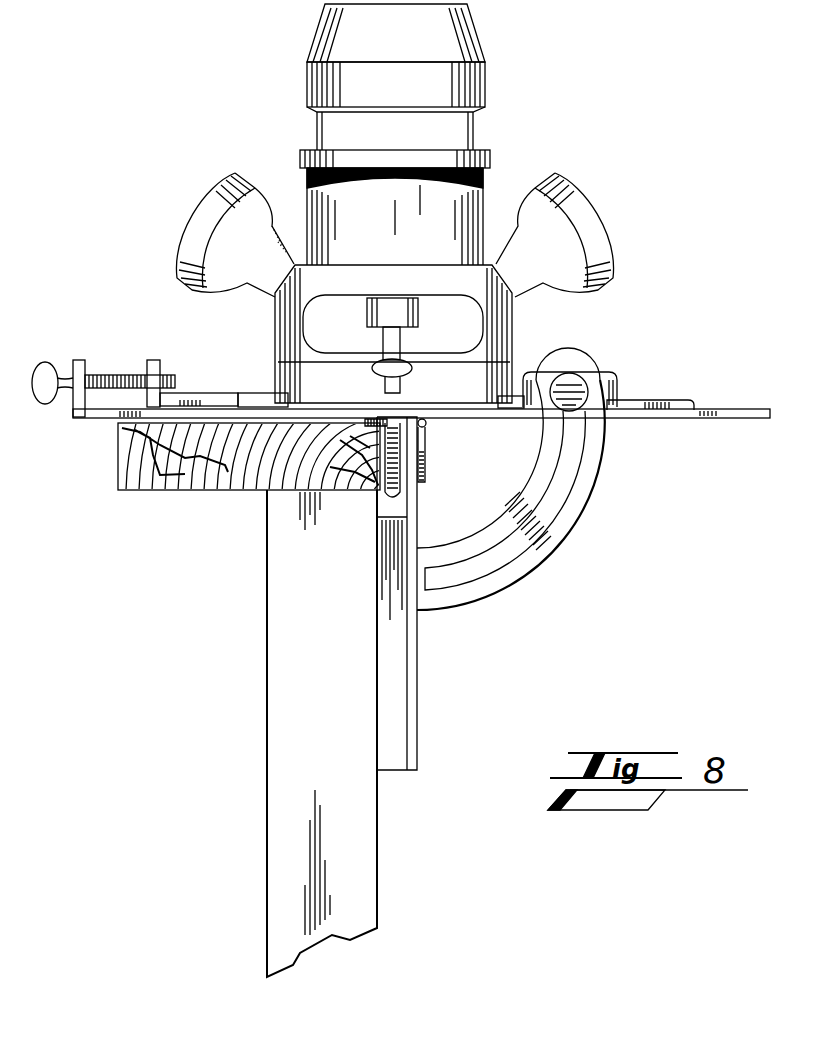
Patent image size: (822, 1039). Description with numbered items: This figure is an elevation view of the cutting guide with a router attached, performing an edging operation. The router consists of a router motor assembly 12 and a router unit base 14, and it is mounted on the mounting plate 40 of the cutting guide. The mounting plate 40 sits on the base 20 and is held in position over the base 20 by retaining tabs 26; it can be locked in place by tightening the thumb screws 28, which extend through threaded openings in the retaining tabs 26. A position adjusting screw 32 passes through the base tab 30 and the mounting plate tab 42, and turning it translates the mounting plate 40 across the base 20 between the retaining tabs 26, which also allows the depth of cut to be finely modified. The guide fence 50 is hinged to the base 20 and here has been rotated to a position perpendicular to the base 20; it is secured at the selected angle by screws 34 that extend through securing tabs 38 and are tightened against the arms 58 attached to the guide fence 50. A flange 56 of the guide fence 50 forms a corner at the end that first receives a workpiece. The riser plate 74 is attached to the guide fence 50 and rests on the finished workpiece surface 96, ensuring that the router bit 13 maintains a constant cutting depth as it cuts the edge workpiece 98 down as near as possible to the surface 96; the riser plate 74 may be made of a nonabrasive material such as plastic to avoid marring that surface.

The router motor assembly 12 is at (323, 47).
The router unit base 14 is at (487, 190).
The router bit 13 is at (392, 500).
The base 20 is at (772, 420).
The retaining tabs 26 is at (266, 396).
The thumb screws 28 is at (388, 362).
The base tab 30 is at (84, 360).
The position adjusting screw 32 is at (46, 362).
The screws 34 is at (573, 382).
The securing tabs 38 is at (615, 390).
The mounting plate 40 is at (693, 406).
The mounting plate tab 42 is at (150, 360).
The guide fence 50 is at (430, 593).
The flange 56 is at (373, 418).
The arms 58 is at (557, 537).
The riser plate 74 is at (395, 743).
The workpiece surface 96 is at (377, 853).
The edge workpiece 98 is at (340, 487).